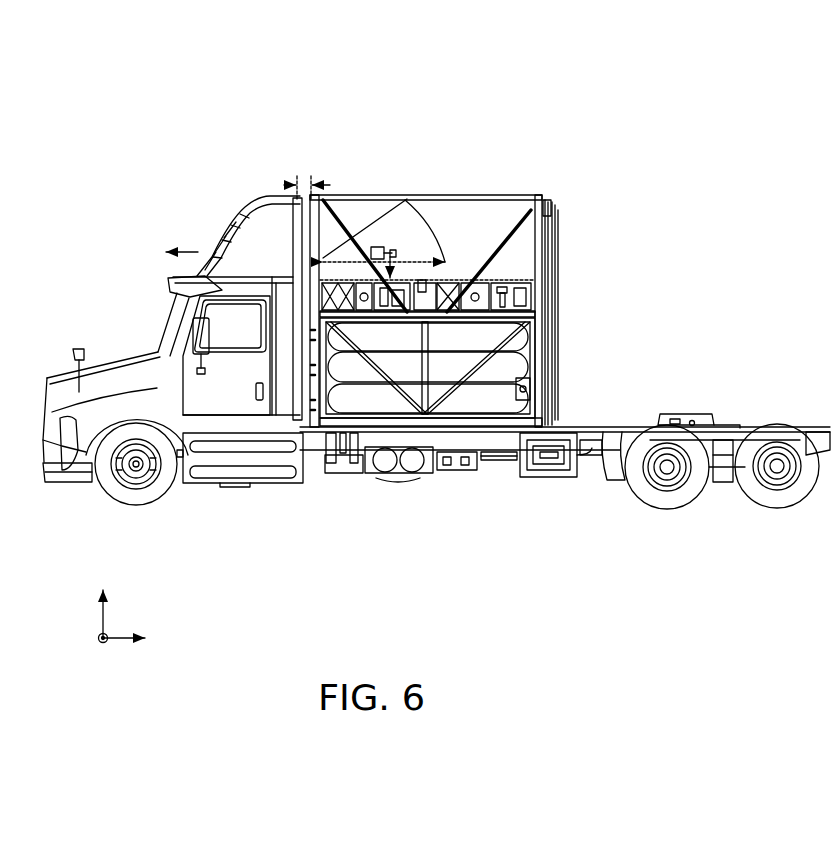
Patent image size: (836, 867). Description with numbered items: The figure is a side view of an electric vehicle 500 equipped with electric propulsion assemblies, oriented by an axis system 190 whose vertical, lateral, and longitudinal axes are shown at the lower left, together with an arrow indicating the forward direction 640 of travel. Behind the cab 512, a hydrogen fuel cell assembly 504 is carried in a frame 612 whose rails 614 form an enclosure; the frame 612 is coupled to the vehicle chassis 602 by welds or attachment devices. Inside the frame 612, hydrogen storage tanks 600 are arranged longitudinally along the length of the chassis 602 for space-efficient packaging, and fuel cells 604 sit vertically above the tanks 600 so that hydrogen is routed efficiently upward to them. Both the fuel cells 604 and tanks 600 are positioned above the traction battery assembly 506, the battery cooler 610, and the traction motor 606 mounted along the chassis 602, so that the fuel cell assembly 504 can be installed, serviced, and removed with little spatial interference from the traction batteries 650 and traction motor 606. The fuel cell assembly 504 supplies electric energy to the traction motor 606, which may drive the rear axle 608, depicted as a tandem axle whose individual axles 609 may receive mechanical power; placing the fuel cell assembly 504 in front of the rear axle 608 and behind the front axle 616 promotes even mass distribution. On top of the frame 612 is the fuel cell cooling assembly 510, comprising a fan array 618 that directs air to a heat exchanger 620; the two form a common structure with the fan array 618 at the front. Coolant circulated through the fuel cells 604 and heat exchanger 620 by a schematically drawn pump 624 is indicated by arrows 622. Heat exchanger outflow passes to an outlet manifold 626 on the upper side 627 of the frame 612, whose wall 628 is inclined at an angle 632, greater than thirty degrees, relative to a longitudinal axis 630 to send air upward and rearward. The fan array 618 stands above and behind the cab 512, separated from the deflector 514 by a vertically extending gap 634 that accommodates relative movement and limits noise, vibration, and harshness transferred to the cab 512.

The axis system 190 is at (126, 597).
The vehicle 500 is at (98, 170).
The hydrogen fuel cell assembly 504 is at (447, 80).
The traction battery assembly 506 is at (498, 515).
The fuel cell cooling assembly 510 is at (376, 148).
The cab 512 is at (138, 318).
The deflector 514 is at (185, 222).
The hydrogen storage tanks 600 is at (535, 367).
The vehicle chassis 602 is at (589, 420).
The fuel cells 604 is at (542, 297).
The traction motor 606 is at (553, 487).
The rear axle 608 is at (723, 515).
The axles 609 is at (670, 512).
The battery cooler 610 is at (398, 485).
The frame 612 is at (546, 192).
The rails 614 is at (548, 201).
The front axle 616 is at (118, 500).
The fan array 618 is at (307, 232).
The heat exchanger 620 is at (340, 196).
The arrows 622 is at (388, 252).
The pump 624 is at (369, 250).
The outlet manifold 626 is at (386, 196).
The upper side 627 is at (443, 190).
The wall 628 is at (386, 218).
The longitudinal axis 630 is at (482, 268).
The angle 632 is at (441, 248).
The gap 634 is at (290, 185).
The forward direction 640 is at (197, 252).
The traction batteries 650 is at (490, 462).